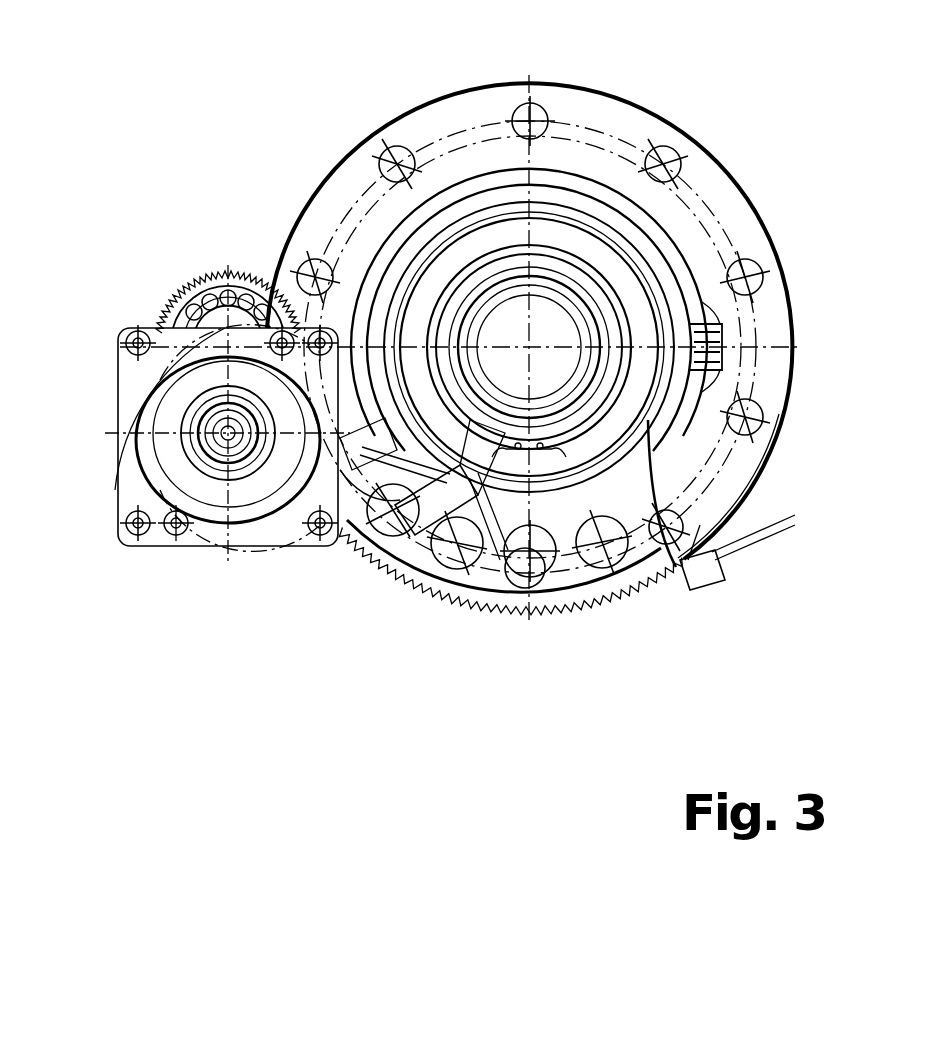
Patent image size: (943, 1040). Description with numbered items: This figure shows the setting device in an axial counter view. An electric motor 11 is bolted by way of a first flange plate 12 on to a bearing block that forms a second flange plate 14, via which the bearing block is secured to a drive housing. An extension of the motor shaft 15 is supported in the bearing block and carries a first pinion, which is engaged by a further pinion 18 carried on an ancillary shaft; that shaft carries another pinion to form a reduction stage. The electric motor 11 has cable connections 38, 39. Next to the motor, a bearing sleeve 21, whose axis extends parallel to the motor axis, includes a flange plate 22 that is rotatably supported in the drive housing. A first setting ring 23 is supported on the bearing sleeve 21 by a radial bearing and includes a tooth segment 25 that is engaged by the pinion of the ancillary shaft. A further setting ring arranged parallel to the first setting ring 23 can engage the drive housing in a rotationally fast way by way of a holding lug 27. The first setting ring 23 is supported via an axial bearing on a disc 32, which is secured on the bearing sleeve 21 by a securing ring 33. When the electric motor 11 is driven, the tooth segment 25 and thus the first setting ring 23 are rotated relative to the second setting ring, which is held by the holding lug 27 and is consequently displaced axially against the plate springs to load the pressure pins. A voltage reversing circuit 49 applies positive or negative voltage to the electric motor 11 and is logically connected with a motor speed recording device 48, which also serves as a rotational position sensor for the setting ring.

The electric motor 11 is at (172, 402).
The first flange plate 12 is at (196, 540).
The second flange plate 14 is at (292, 535).
The motor shaft 15 is at (207, 440).
The further pinion 18 is at (205, 286).
The bearing sleeve 21 is at (542, 265).
The flange plate 22 is at (632, 127).
The first setting ring 23 is at (496, 213).
The tooth segment 25 is at (602, 602).
The holding lug 27 is at (735, 332).
The disc 32 is at (600, 247).
The securing ring 33 is at (615, 293).
The cable connection 38 is at (472, 505).
The cable connection 39 is at (500, 528).
The motor speed recording device 48 is at (705, 582).
The voltage reversing circuit 49 is at (415, 578).